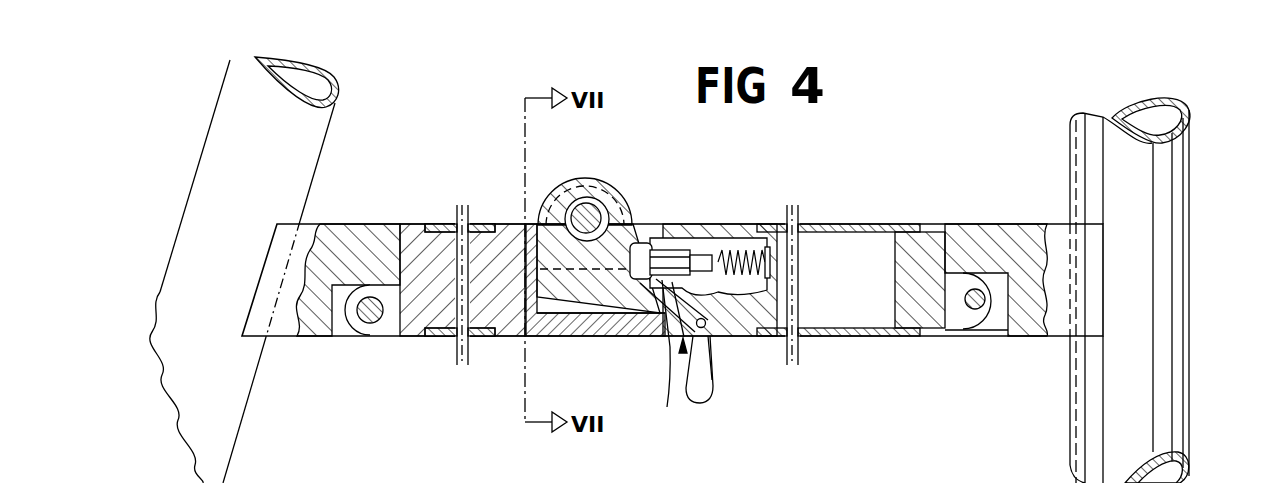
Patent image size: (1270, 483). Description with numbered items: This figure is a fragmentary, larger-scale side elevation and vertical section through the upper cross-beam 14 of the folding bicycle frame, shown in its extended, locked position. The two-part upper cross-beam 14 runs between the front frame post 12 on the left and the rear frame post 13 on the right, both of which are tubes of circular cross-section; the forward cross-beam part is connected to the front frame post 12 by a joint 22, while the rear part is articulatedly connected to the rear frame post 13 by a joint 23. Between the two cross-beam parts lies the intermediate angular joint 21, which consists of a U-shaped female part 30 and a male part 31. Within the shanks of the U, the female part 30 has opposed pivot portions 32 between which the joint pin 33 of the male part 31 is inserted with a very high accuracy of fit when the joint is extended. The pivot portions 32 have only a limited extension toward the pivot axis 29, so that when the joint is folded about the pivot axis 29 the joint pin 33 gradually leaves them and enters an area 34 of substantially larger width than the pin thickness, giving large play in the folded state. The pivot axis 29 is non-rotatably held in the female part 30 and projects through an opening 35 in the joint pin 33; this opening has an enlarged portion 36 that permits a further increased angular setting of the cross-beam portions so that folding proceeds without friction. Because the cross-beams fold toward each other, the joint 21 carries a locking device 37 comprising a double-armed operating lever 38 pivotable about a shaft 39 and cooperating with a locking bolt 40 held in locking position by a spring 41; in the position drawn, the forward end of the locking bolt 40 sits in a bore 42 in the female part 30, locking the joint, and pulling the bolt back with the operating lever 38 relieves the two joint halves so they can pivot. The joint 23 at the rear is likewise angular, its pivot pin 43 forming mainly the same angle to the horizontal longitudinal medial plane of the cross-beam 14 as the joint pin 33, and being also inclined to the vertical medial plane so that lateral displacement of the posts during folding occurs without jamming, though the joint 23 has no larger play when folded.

The front frame post 12 is at (293, 162).
The rear frame post 13 is at (1165, 185).
The upper cross-beam 14 is at (497, 250).
The joint 21 is at (650, 214).
The joint 22 is at (369, 311).
The joint 23 is at (975, 307).
The pivot axis 29 is at (602, 220).
The female part 30 is at (502, 300).
The male part 31 is at (752, 305).
The pivot portions 32 is at (556, 304).
The joint pin 33 is at (620, 300).
The area 34 is at (588, 318).
The opening 35 is at (583, 202).
The enlarged portion 36 is at (600, 218).
The locking device 37 is at (695, 398).
The operating lever 38 is at (709, 383).
The shaft 39 is at (705, 328).
The locking bolt 40 is at (667, 263).
The spring 41 is at (755, 248).
The bore 42 is at (668, 355).
The pivot pin 43 is at (948, 307).